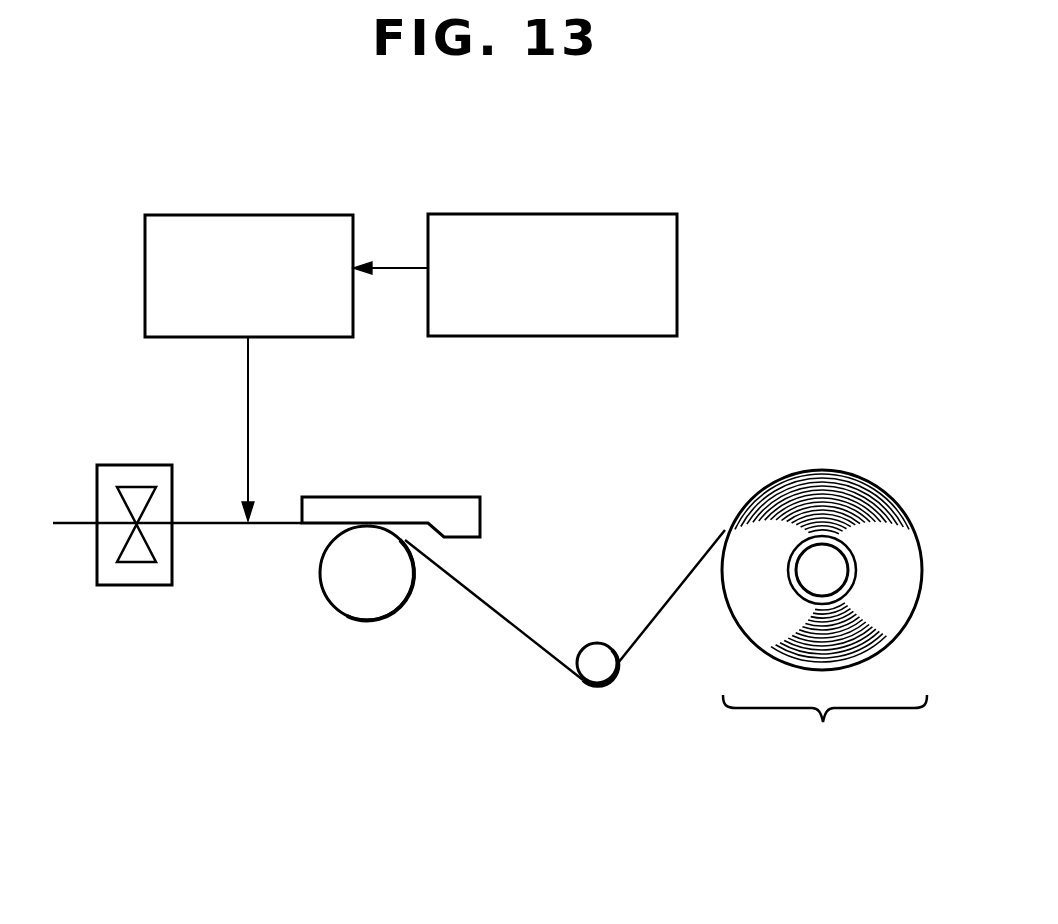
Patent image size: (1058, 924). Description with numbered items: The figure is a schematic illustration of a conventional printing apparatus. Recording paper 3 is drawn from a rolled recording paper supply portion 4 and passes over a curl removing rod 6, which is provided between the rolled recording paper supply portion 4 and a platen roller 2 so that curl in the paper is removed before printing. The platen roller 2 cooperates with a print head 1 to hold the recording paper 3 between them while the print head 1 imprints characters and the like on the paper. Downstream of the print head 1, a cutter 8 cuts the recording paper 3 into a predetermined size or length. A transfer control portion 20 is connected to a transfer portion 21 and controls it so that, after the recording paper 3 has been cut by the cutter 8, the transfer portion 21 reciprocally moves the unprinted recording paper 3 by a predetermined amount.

The print head 1 is at (412, 502).
The platen roller 2 is at (352, 603).
The recording paper 3 is at (682, 582).
The rolled recording paper supply portion 4 is at (824, 617).
The curl removing rod 6 is at (598, 645).
The cutter 8 is at (147, 577).
The transfer control portion 20 is at (678, 233).
The transfer portion 21 is at (178, 215).